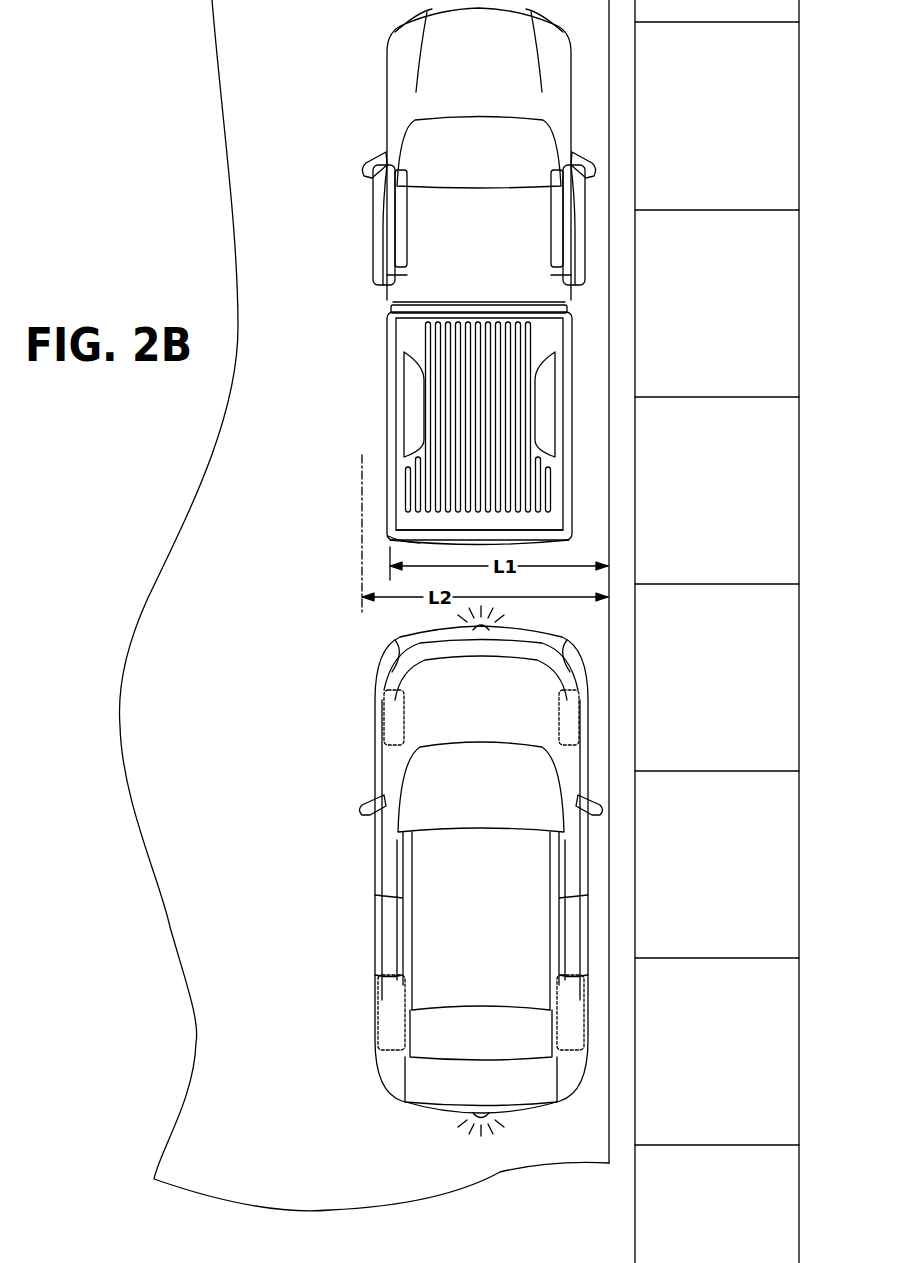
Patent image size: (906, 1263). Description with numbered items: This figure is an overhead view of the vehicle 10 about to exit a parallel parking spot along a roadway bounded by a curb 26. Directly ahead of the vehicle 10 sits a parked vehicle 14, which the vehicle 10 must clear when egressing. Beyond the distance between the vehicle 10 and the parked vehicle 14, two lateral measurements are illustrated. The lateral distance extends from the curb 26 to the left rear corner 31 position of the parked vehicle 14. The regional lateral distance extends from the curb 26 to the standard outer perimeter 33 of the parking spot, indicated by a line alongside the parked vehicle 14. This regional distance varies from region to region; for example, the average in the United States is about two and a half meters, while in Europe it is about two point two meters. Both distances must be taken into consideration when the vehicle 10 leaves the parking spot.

The vehicle 10 is at (378, 886).
The parked vehicle 14 is at (386, 97).
The curb 26 is at (625, 672).
The left rear corner 31 is at (388, 536).
The standard outer perimeter 33 is at (362, 468).